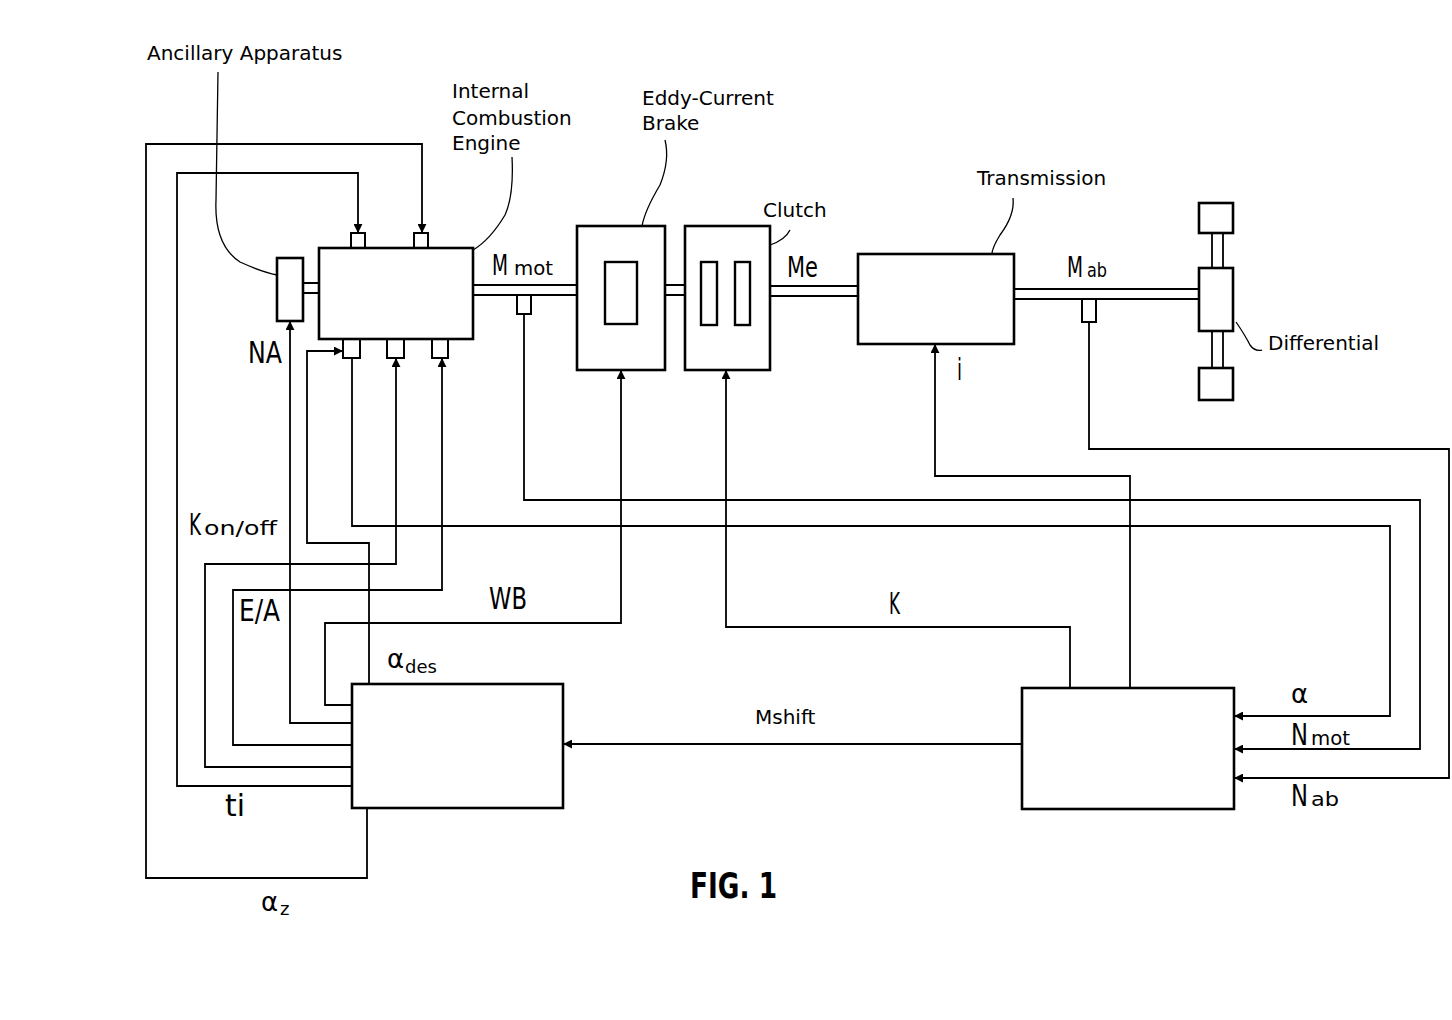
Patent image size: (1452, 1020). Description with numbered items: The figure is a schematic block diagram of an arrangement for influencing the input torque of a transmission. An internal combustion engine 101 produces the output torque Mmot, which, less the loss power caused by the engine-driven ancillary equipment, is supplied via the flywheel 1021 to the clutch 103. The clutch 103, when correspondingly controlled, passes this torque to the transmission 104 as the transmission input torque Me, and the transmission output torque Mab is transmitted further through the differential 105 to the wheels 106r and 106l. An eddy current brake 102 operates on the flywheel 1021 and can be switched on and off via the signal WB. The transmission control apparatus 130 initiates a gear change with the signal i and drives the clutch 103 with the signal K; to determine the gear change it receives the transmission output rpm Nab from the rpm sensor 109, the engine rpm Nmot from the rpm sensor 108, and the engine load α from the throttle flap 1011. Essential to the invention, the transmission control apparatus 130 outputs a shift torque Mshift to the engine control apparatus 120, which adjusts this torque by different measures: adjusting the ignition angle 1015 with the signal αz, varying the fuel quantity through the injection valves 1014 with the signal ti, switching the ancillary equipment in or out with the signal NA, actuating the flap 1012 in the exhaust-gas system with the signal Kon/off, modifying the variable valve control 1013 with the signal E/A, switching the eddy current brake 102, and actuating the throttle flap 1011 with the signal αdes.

The internal combustion engine 101 is at (450, 295).
The eddy current brake 102 is at (616, 226).
The clutch 103 is at (726, 226).
The transmission 104 is at (928, 254).
The differential 105 is at (1222, 298).
The right wheel 106r is at (1222, 215).
The left wheel 106l is at (1222, 389).
The rpm sensor 108 is at (532, 300).
The rpm sensor 109 is at (1093, 322).
The throttle flap 1011 is at (355, 355).
The flap in the exhaust-gas system 1012 is at (400, 352).
The variable valve control 1013 is at (447, 350).
The injection valves 1014 is at (366, 246).
The ignition angle 1015 is at (429, 246).
The flywheel 1021 is at (620, 320).
The engine control apparatus 120 is at (482, 808).
The transmission control apparatus 130 is at (1124, 809).